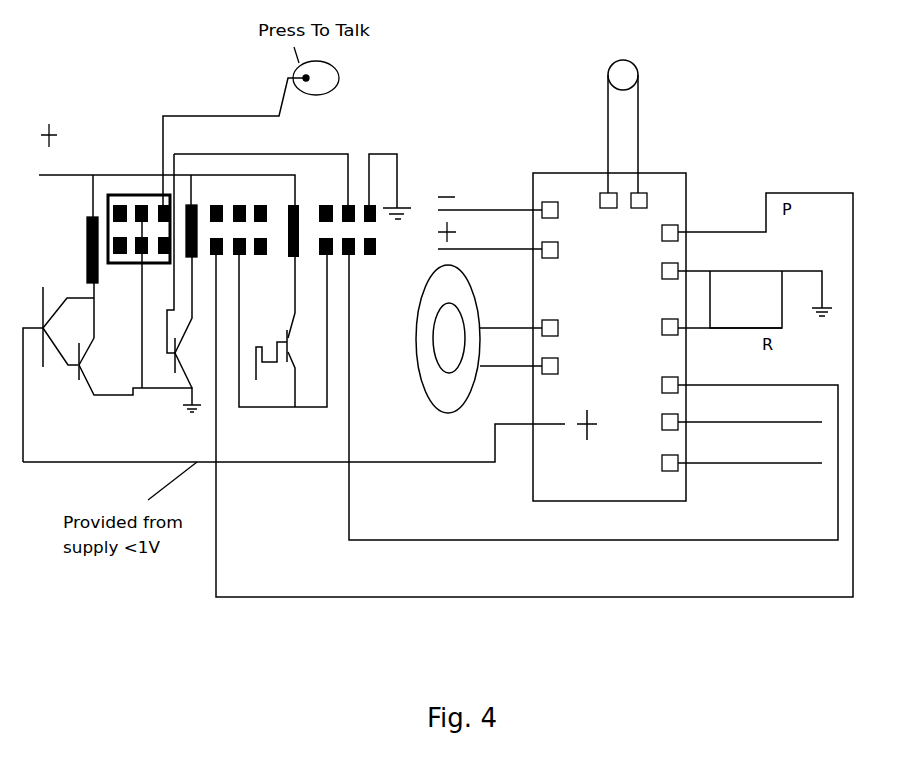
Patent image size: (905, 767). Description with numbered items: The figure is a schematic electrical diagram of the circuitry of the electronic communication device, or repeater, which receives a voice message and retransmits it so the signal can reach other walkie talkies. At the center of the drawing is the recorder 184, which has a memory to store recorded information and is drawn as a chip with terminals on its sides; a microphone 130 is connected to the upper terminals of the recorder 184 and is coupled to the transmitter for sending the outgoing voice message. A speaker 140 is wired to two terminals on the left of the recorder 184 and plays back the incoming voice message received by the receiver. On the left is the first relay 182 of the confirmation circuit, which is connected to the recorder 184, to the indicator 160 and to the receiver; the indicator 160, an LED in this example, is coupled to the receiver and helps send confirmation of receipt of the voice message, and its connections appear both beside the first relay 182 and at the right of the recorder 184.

The microphone 130 is at (633, 63).
The speaker 140 is at (426, 392).
The indicator 160 is at (268, 373).
The first relay 182 is at (123, 195).
The recorder 184 is at (533, 173).